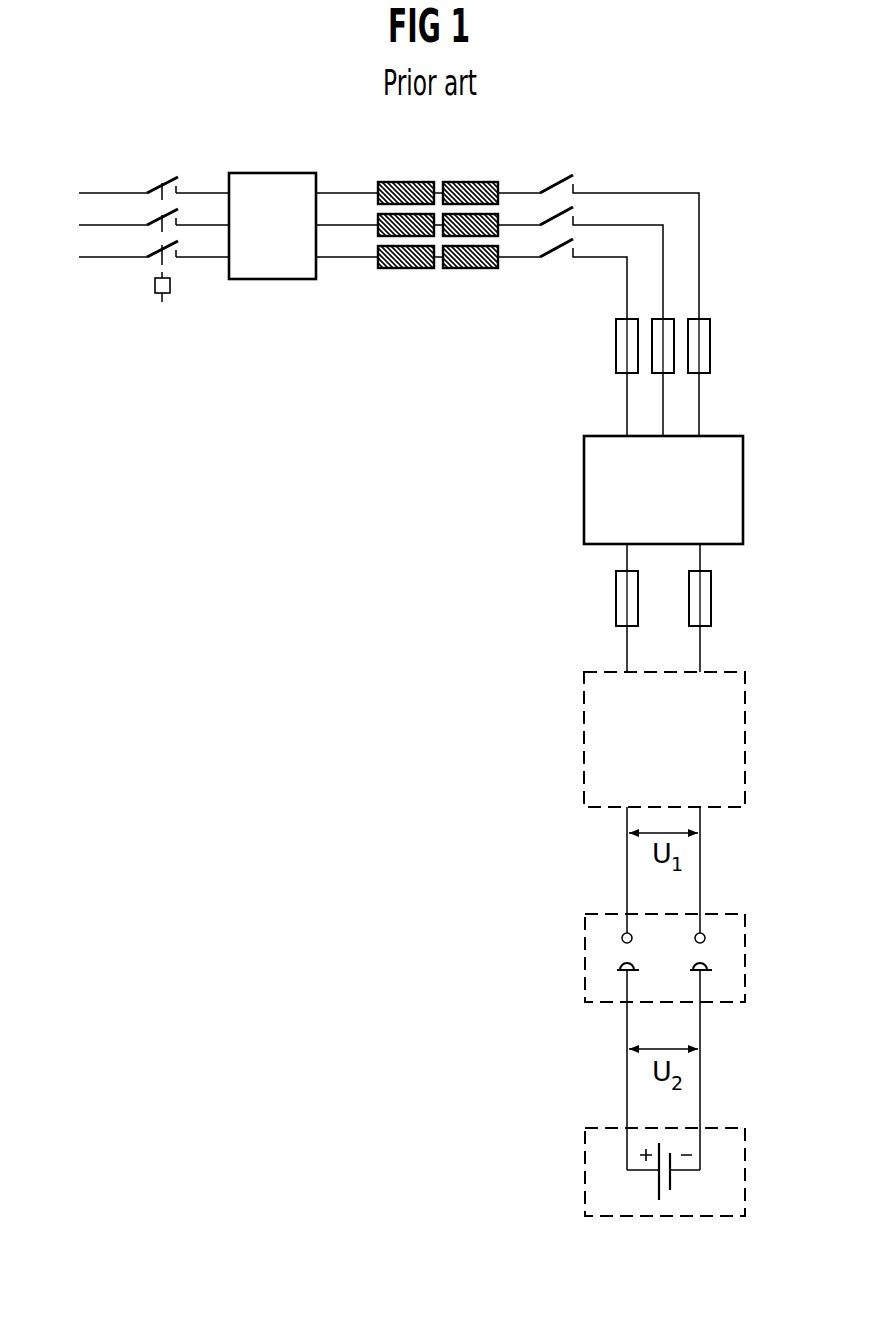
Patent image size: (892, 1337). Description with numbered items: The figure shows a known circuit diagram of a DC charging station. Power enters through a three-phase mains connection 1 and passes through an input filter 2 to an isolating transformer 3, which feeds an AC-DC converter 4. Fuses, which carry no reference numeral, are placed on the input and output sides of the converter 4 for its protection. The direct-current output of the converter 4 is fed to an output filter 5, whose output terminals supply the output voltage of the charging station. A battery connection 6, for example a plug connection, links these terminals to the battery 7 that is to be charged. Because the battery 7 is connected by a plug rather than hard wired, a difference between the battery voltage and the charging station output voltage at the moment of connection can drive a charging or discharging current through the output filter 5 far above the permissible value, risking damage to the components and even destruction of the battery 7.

The 3-phase mains connection 1 is at (129, 291).
The input filter 2 is at (272, 268).
The isolating transformer 3 is at (419, 292).
The AC-DC converter 4 is at (733, 492).
The output filter 5 is at (733, 733).
The battery connection 6 is at (733, 948).
The battery 7 is at (733, 1162).